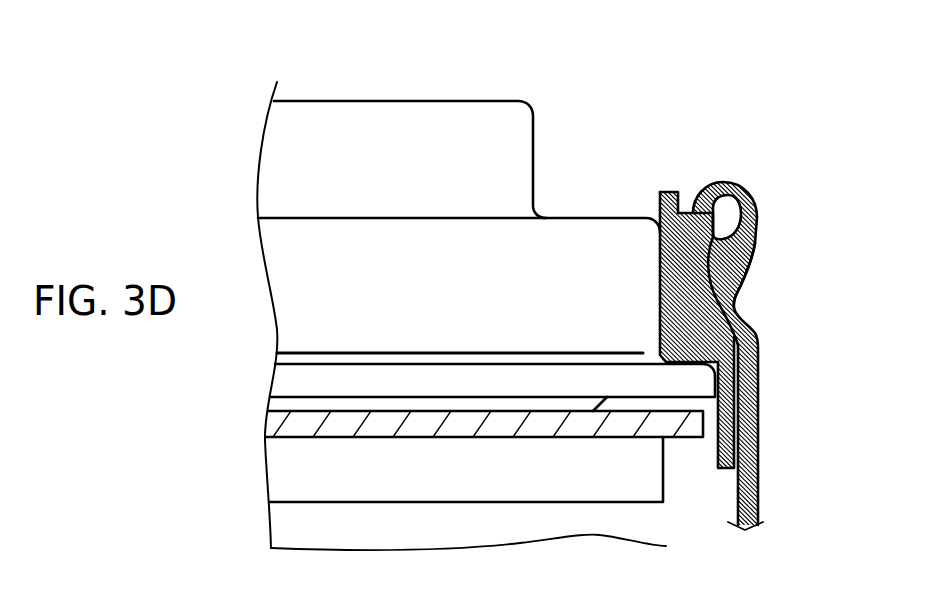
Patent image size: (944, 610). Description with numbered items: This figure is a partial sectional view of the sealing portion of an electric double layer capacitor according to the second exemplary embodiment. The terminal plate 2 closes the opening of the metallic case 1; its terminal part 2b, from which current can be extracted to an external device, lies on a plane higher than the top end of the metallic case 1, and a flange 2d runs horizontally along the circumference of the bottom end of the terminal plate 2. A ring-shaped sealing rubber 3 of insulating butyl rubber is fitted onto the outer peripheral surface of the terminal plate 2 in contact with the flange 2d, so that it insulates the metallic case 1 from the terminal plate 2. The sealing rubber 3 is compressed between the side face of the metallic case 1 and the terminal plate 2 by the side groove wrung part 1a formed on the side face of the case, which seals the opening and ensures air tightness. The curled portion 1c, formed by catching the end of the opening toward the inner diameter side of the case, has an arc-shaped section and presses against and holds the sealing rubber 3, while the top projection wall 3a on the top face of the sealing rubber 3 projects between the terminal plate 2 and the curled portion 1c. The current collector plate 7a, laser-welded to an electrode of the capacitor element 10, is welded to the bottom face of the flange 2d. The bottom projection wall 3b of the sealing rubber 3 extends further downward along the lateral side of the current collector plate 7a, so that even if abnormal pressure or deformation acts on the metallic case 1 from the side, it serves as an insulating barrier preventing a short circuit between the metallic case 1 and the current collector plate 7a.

The metallic case 1 is at (624, 324).
The side groove wrung part 1a is at (740, 287).
The curled portion 1c is at (728, 185).
The terminal plate 2 is at (568, 245).
The terminal part 2b is at (352, 117).
The flange 2d is at (673, 383).
The sealing rubber 3 is at (624, 317).
The top projection wall 3a is at (670, 203).
The bottom projection wall 3b is at (723, 465).
The current collector plate 7a is at (303, 418).
The capacitor element 10 is at (302, 523).